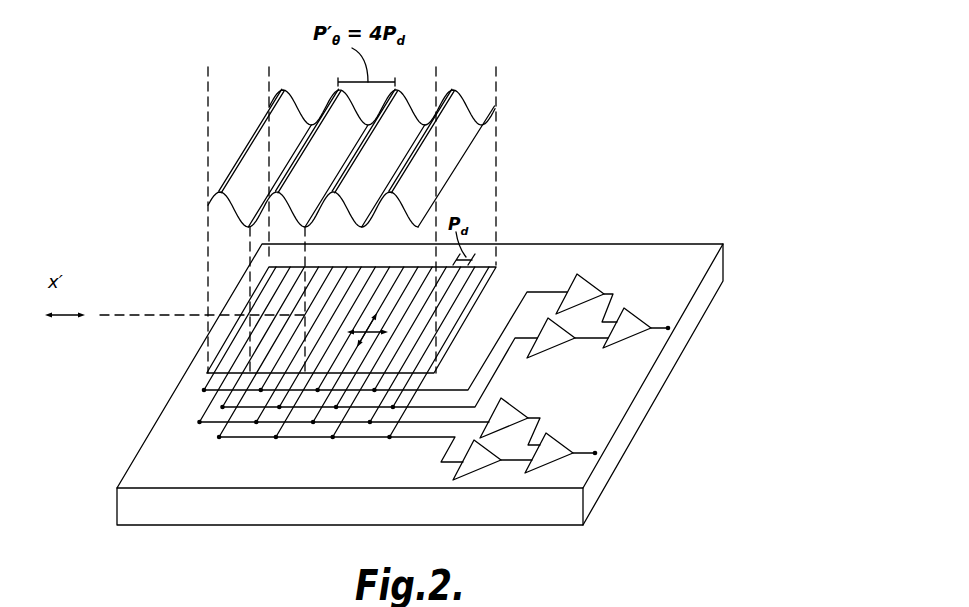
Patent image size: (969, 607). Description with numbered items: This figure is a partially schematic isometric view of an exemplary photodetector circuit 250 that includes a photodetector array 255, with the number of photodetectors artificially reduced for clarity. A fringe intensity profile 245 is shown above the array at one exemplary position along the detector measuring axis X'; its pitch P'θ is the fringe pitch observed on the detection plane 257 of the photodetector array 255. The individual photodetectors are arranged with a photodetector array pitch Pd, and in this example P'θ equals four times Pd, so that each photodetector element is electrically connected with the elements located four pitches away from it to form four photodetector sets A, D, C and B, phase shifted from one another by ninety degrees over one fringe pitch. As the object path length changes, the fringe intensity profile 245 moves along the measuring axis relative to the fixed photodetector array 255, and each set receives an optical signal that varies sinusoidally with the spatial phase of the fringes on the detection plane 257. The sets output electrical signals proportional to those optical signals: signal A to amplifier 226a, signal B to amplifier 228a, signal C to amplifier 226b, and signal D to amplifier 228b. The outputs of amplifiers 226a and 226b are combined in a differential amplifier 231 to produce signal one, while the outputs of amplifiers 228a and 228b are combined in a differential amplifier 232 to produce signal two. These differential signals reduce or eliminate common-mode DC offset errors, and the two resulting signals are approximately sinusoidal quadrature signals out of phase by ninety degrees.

The fringe intensity profile 245 is at (488, 143).
The photodetector circuit 250 is at (180, 384).
The photodetector array 255 is at (490, 284).
The detection plane 257 is at (362, 330).
The amplifier 226a is at (590, 279).
The amplifier 226b is at (556, 350).
The amplifier 228a is at (517, 409).
The amplifier 228b is at (483, 468).
The differential amplifier 231 is at (612, 339).
The differential amplifier 232 is at (555, 465).